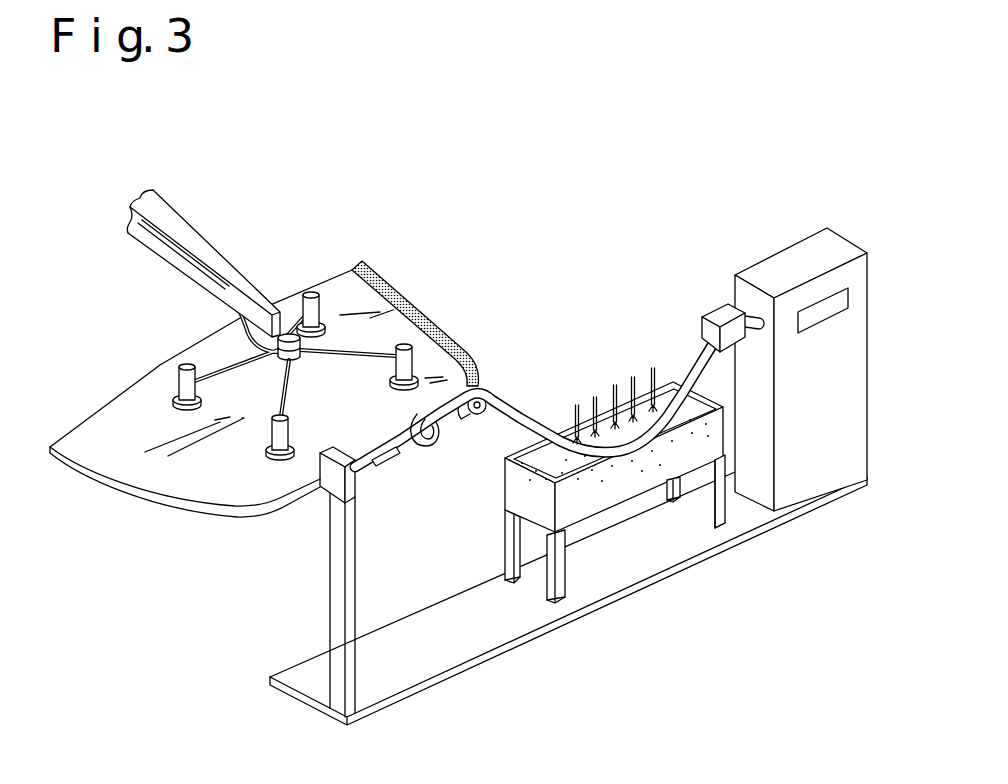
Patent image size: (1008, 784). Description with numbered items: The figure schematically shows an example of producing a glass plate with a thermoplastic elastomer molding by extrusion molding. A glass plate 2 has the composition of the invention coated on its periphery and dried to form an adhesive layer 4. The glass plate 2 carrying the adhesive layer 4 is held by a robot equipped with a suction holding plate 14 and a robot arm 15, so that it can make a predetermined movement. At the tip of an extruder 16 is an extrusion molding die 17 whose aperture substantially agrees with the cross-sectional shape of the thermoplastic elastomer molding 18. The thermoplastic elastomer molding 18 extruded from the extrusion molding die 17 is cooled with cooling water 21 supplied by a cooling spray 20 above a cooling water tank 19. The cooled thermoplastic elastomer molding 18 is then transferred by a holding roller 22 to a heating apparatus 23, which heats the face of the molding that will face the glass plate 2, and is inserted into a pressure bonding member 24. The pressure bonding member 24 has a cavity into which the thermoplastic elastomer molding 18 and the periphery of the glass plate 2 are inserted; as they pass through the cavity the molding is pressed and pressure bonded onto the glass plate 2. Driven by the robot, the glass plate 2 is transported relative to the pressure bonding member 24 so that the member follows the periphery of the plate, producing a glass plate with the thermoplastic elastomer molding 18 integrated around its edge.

The glass plate 2 is at (376, 297).
The adhesive layer 4 is at (412, 308).
The suction holding plate 14 is at (176, 394).
The robot arm 15 is at (221, 254).
The extruder 16 is at (861, 357).
The extrusion molding die 17 is at (717, 314).
The thermoplastic elastomer molding 18 is at (698, 337).
The cooling water tank 19 is at (632, 486).
The cooling spray 20 is at (612, 388).
The cooling water 21 is at (593, 405).
The holding roller 22 is at (478, 416).
The heating apparatus 23 is at (437, 422).
The pressure bonding member 24 is at (354, 497).